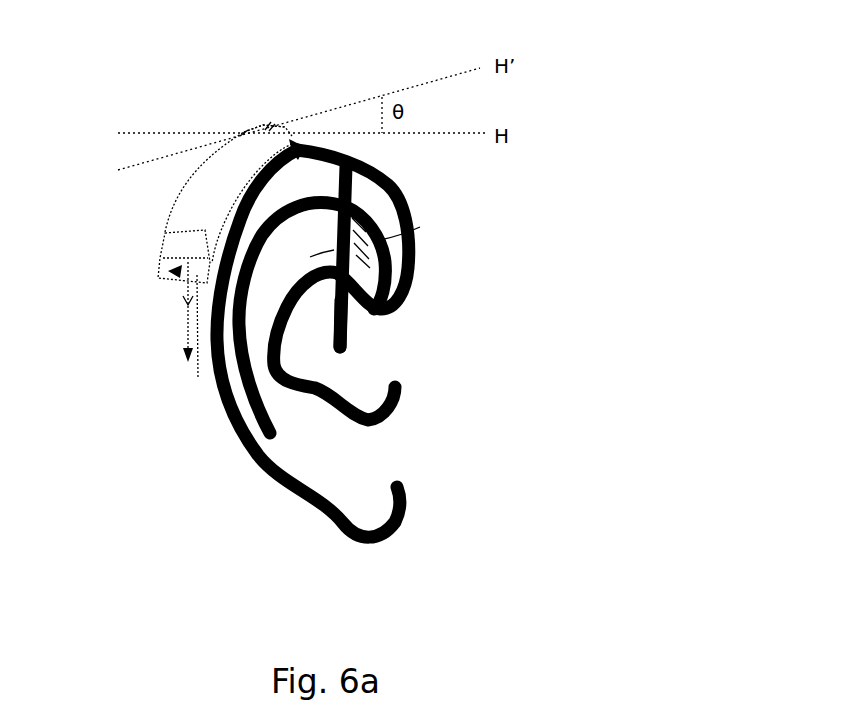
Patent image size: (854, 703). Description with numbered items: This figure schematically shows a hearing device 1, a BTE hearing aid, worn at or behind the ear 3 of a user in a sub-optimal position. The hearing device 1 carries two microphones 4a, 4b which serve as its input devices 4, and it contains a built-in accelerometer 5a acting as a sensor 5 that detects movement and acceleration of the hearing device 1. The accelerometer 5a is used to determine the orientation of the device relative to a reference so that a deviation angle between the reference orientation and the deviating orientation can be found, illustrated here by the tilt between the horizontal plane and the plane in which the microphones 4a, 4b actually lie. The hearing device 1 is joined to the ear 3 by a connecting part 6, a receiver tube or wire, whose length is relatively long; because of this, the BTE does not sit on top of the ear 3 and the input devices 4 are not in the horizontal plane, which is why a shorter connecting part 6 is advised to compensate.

The hearing device 1 is at (222, 167).
The ear 3 is at (303, 445).
The input devices 4 is at (231, 107).
The microphone 4a is at (245, 132).
The microphone 4b is at (270, 125).
The sensor 5 is at (154, 251).
The accelerometer 5a is at (196, 254).
The connecting part 6 is at (347, 305).